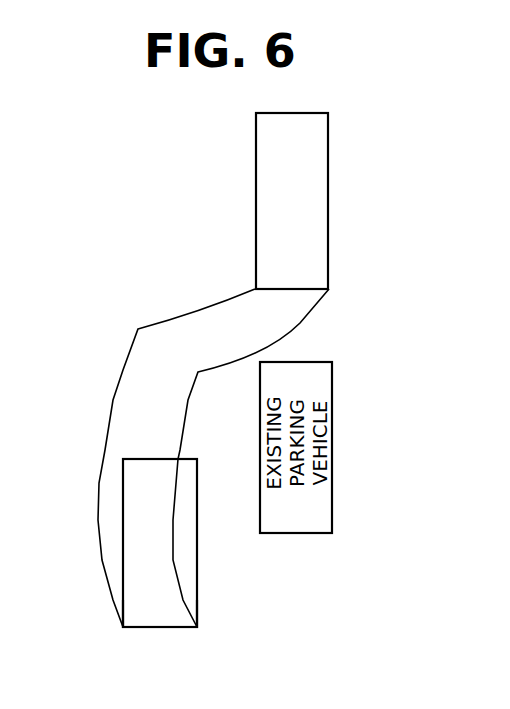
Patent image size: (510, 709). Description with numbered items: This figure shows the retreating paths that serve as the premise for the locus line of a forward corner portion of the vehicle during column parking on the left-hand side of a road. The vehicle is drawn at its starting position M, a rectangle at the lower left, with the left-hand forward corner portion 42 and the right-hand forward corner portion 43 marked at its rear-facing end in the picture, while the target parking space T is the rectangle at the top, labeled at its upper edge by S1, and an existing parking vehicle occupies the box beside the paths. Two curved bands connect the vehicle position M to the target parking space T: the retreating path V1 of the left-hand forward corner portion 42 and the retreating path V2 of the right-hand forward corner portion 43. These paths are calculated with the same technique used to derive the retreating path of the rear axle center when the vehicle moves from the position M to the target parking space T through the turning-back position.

The target parking space T is at (323, 197).
The target parking space start line S1 is at (328, 113).
The retreating path of the left-hand forward corner portion V1 is at (310, 315).
The retreating path of the right-hand forward corner portion V2 is at (206, 312).
The position of the vehicle M is at (190, 553).
The left-hand forward corner portion 42 is at (198, 628).
The right-hand forward corner portion 43 is at (120, 628).